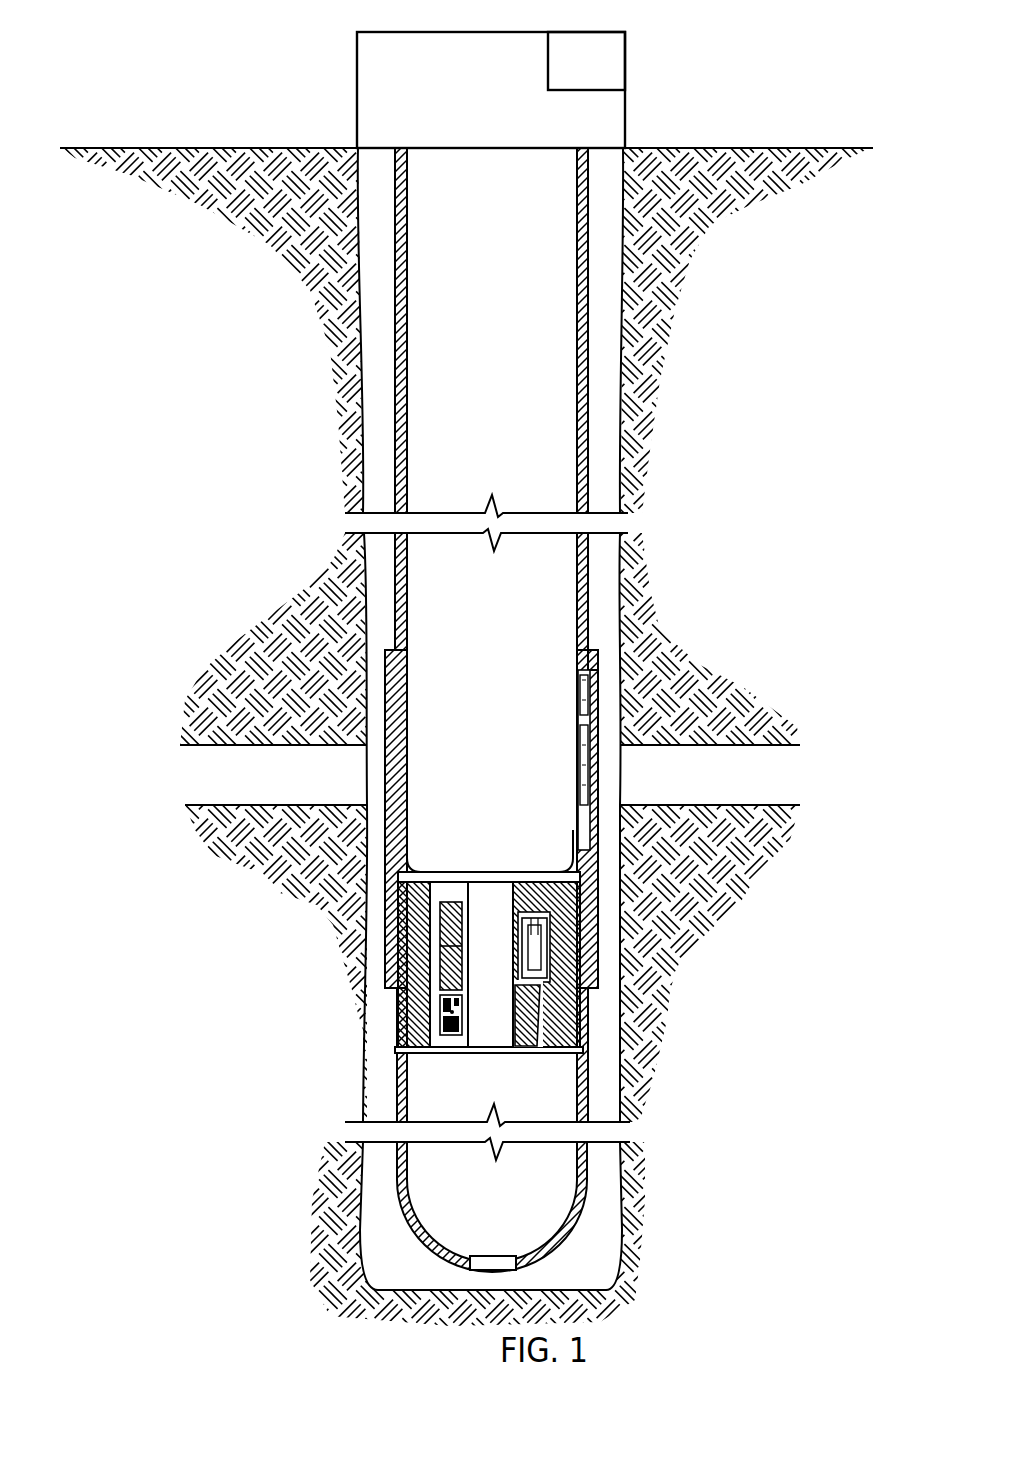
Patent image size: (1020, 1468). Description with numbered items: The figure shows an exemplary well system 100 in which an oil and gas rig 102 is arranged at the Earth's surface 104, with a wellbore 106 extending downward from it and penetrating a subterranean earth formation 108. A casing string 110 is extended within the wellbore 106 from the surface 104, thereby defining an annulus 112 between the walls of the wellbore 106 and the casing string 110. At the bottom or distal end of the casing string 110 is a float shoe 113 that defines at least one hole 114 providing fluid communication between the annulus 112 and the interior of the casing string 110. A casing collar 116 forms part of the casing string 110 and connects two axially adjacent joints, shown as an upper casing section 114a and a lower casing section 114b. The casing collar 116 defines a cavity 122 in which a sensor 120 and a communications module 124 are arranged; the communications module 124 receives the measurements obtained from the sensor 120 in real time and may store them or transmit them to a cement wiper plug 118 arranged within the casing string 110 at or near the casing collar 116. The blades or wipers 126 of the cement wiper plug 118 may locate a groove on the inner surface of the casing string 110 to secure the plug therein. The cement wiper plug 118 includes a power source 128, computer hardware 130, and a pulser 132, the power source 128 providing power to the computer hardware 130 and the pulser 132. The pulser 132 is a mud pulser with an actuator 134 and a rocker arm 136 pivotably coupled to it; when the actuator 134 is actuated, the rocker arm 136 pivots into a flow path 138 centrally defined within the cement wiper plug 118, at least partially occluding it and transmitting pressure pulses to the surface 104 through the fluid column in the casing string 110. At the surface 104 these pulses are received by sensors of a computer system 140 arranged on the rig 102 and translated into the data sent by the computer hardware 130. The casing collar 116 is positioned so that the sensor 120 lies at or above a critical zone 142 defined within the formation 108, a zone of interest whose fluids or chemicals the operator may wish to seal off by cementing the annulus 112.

The well system 100 is at (792, 266).
The oil and gas rig 102 is at (510, 103).
The Earth's surface 104 is at (779, 148).
The wellbore 106 is at (360, 298).
The subterranean earth formation 108 is at (262, 998).
The casing string 110 is at (590, 405).
The annulus 112 is at (380, 438).
The float shoe 113 is at (413, 1256).
The hole 114 is at (468, 1268).
The upper casing section 114a is at (590, 586).
The lower casing section 114b is at (588, 1090).
The casing collar 116 is at (618, 646).
The cement wiper plug 118 is at (585, 910).
The sensor 120 is at (624, 696).
The cavity 122 is at (580, 673).
The communications module 124 is at (580, 790).
The wipers 126 is at (578, 955).
The power source 128 is at (440, 922).
The computer hardware 130 is at (440, 1020).
The pulser 132 is at (558, 944).
The actuator 134 is at (522, 933).
The rocker arm 136 is at (528, 1032).
The flow path 138 is at (472, 1020).
The computer system 140 is at (605, 74).
The critical zone 142 is at (297, 785).